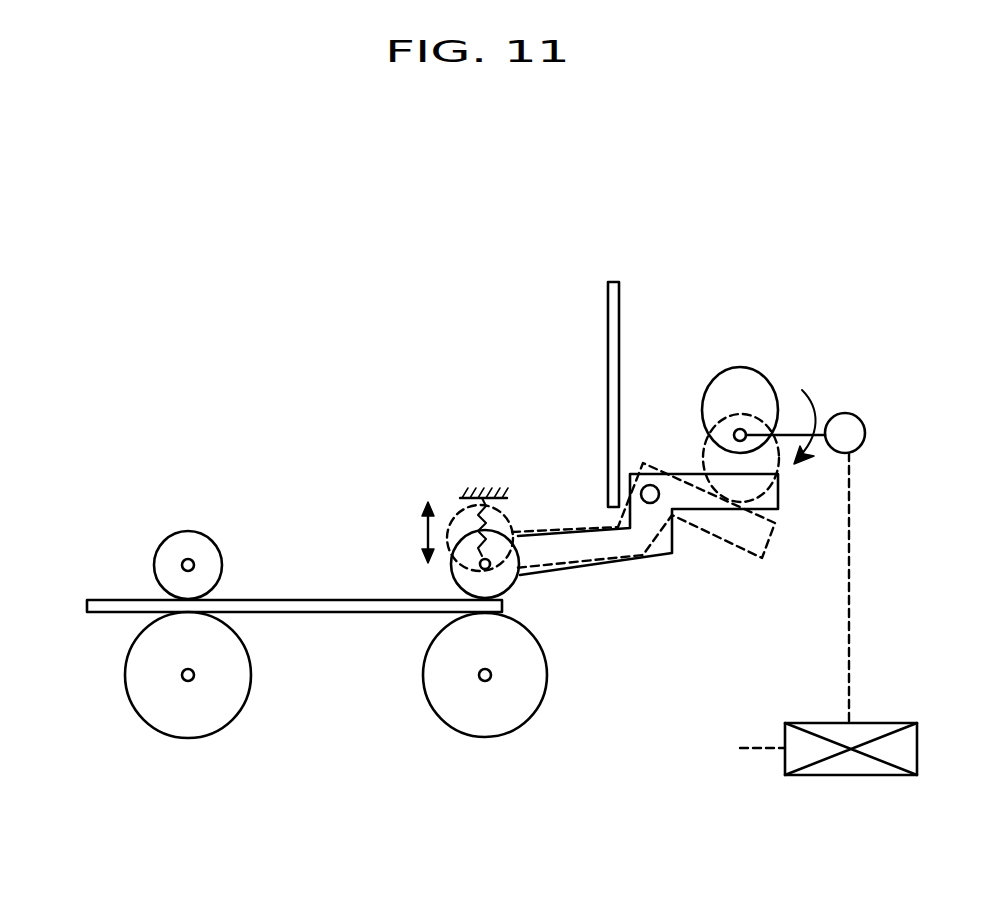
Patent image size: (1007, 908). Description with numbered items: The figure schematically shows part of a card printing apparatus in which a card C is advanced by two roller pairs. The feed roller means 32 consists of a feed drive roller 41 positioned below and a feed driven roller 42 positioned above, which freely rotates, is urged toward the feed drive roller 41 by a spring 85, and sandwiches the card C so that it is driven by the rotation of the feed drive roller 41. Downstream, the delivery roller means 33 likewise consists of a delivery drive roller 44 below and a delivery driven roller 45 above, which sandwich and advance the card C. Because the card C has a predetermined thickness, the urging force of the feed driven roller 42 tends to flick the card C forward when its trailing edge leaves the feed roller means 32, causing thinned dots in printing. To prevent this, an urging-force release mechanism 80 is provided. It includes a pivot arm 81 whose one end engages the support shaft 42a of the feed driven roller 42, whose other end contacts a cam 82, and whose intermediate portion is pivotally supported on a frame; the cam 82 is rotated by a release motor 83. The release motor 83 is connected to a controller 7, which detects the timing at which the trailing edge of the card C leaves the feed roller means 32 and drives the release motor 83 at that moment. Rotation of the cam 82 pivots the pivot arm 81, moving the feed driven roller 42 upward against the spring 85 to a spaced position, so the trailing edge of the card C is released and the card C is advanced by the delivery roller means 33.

The controller 7 is at (835, 777).
The feed roller means 32 is at (495, 648).
The delivery roller means 33 is at (134, 640).
The feed drive roller 41 is at (447, 703).
The feed driven roller 42 is at (422, 552).
The support shaft 42a is at (480, 564).
The delivery drive roller 44 is at (157, 708).
The delivery driven roller 45 is at (162, 543).
The urging-force release mechanism 80 is at (698, 390).
The pivot arm 81 is at (655, 556).
The cam 82 is at (742, 367).
The release motor 83 is at (850, 413).
The spring 85 is at (483, 530).
The card C is at (261, 598).